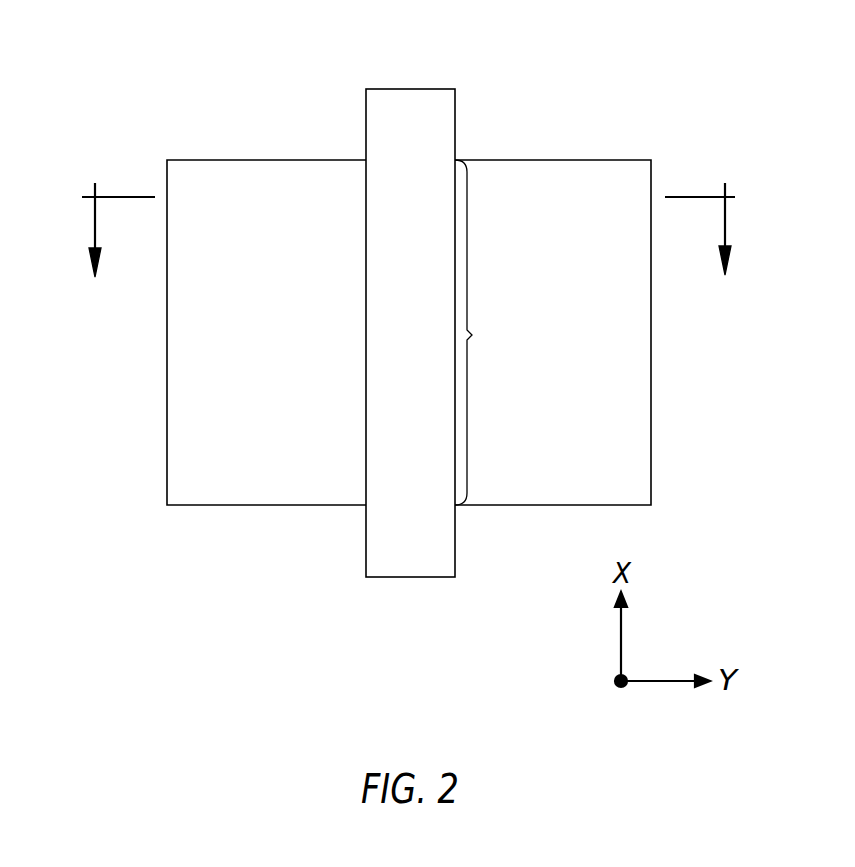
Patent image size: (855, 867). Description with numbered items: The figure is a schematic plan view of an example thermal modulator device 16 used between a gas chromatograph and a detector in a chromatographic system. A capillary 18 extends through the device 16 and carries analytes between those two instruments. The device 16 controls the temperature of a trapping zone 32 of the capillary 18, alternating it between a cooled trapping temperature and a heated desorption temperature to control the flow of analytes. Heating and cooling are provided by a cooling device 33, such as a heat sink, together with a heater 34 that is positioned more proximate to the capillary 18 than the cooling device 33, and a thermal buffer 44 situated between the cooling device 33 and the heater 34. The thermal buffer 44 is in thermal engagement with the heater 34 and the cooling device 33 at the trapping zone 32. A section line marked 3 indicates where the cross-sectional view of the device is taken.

The thermal modulator device 16 is at (361, 286).
The cooling device 33 is at (190, 121).
The capillary 18 is at (351, 297).
The heater 34 is at (351, 297).
The thermal buffer 44 is at (375, 69).
The trapping zone 32 is at (477, 332).
The section line 3- 3 is at (409, 228).